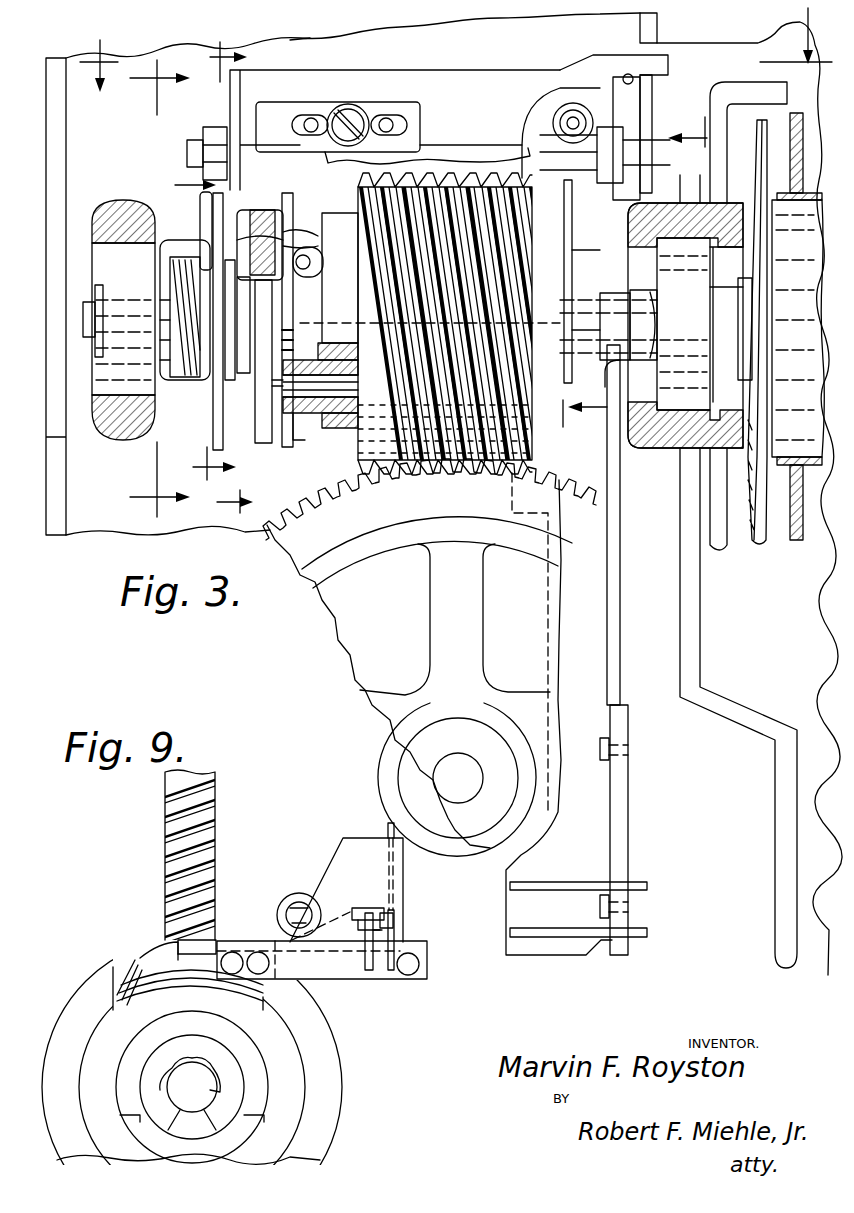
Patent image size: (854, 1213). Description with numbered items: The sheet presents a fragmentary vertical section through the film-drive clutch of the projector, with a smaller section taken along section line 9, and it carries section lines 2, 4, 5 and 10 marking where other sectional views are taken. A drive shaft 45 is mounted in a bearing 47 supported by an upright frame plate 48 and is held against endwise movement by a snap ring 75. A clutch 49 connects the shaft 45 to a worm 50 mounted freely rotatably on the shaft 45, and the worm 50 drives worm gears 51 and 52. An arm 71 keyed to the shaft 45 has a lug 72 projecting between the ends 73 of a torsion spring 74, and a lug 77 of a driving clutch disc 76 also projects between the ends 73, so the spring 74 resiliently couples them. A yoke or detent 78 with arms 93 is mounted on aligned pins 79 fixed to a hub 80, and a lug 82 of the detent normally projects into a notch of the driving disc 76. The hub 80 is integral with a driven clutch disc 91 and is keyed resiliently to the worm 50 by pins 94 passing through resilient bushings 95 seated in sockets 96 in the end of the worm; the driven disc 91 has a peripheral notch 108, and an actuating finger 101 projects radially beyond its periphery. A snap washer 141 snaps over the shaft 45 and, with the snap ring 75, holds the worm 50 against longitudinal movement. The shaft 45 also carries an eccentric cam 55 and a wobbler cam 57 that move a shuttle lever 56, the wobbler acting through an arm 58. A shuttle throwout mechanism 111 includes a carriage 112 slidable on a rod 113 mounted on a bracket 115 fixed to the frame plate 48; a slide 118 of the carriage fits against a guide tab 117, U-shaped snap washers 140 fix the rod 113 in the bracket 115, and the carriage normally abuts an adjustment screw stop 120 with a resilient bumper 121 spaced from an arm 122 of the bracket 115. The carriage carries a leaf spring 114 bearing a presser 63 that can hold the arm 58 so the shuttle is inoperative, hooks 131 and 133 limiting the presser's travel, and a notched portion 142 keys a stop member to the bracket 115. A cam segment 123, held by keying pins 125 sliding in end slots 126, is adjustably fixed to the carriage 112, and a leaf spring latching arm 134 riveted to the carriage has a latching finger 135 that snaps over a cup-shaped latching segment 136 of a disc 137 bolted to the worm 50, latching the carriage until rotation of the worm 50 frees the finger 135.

In FIG. 3, the upright frame plate 48 is at (300, 42).
In FIG. 3, the section line 10 is at (455, 61).
In FIG. 3, the section line 2 is at (160, 291).
In FIG. 3, the section line 5 is at (242, 277).
In FIG. 3, the section line 4 is at (199, 331).
In FIG. 3, the section line 9 is at (635, 276).
In FIG. 3, the lug 77 is at (168, 218).
In FIG. 3, the lug 72 is at (178, 242).
In FIG. 3, the arm 71 is at (152, 400).
In FIG. 3, the snap ring 75 is at (88, 340).
In FIG. 3, the ends of torsion spring 73 is at (200, 202).
In FIG. 3, the torsion spring 74 is at (200, 416).
In FIG. 3, the adjustment screw stop 120 is at (240, 127).
In FIG. 3, the driving clutch plate 76 is at (222, 445).
In FIG. 3, the actuating finger 101 is at (264, 445).
In FIG. 3, the lug 82 is at (282, 214).
In FIG. 3, the aligned pins 79 is at (311, 262).
In FIG. 3, the yoke or detent 78 is at (300, 232).
In FIG. 3, the arms of yoke 93 is at (300, 246).
In FIG. 3, the driven clutch disc 91 is at (300, 302).
In FIG. 3, the hub 80 is at (292, 405).
In FIG. 3, the sockets 96 is at (337, 345).
In FIG. 3, the pins 94 is at (296, 384).
In FIG. 3, the resilient bushings 95 is at (342, 425).
In FIG. 3, the peripheral notch 108 is at (298, 445).
In FIG. 3, the clutch 49 is at (224, 428).
In FIG. 3, the clutch operated shuttle throwout mechanism 111 is at (426, 113).
In FIG. 3, the bracket 115 is at (497, 83).
In FIG. 9, the bracket 115 is at (356, 843).
In FIG. 3, the rod 113 is at (490, 144).
In FIG. 9, the rod 113 is at (298, 905).
In FIG. 3, the cam segment 123 is at (352, 108).
In FIG. 3, the end slots 126 is at (300, 116).
In FIG. 3, the keying pins 125 is at (313, 117).
In FIG. 3, the worm gear 51 is at (446, 165).
In FIG. 9, the worm gear 51 is at (183, 830).
In FIG. 3, the latching finger 135 is at (547, 173).
In FIG. 9, the latching finger 135 is at (163, 940).
In FIG. 3, the resilient bumper 121 is at (613, 133).
In FIG. 3, the notched portion 142 is at (628, 80).
In FIG. 3, the arm of bracket 122 is at (652, 108).
In FIG. 3, the leaf spring latching arm 134 is at (600, 185).
In FIG. 9, the leaf spring latching arm 134 is at (216, 940).
In FIG. 3, the camming and latching segment 136 is at (572, 212).
In FIG. 9, the camming and latching segment 136 is at (180, 938).
In FIG. 3, the disc 137 is at (572, 262).
In FIG. 9, the disc 137 is at (102, 1027).
In FIG. 3, the bearing 47 is at (690, 324).
In FIG. 9, the bearing 47 is at (287, 1098).
In FIG. 3, the drive shaft 45 is at (610, 304).
In FIG. 9, the drive shaft 45 is at (190, 1068).
In FIG. 3, the arm 58 is at (722, 96).
In FIG. 3, the wobbler cam 57 is at (757, 535).
In FIG. 3, the eccentric cam 55 is at (805, 274).
In FIG. 3, the shuttle lever 56 is at (795, 540).
In FIG. 3, the worm 50 is at (413, 470).
In FIG. 9, the worm 50 is at (90, 985).
In FIG. 3, the worm gear 52 is at (323, 545).
In FIG. 9, the leaf spring 114 is at (360, 978).
In FIG. 9, the carriage 112 is at (250, 940).
In FIG. 9, the presser 63 is at (420, 968).
In FIG. 9, the spring snap washers 140 is at (304, 908).
In FIG. 9, the slide 118 is at (375, 912).
In FIG. 9, the guide tab 117 is at (395, 945).
In FIG. 9, the hook 131 is at (385, 958).
In FIG. 9, the hook 133 is at (372, 965).
In FIG. 9, the snap washer 141 is at (292, 1092).